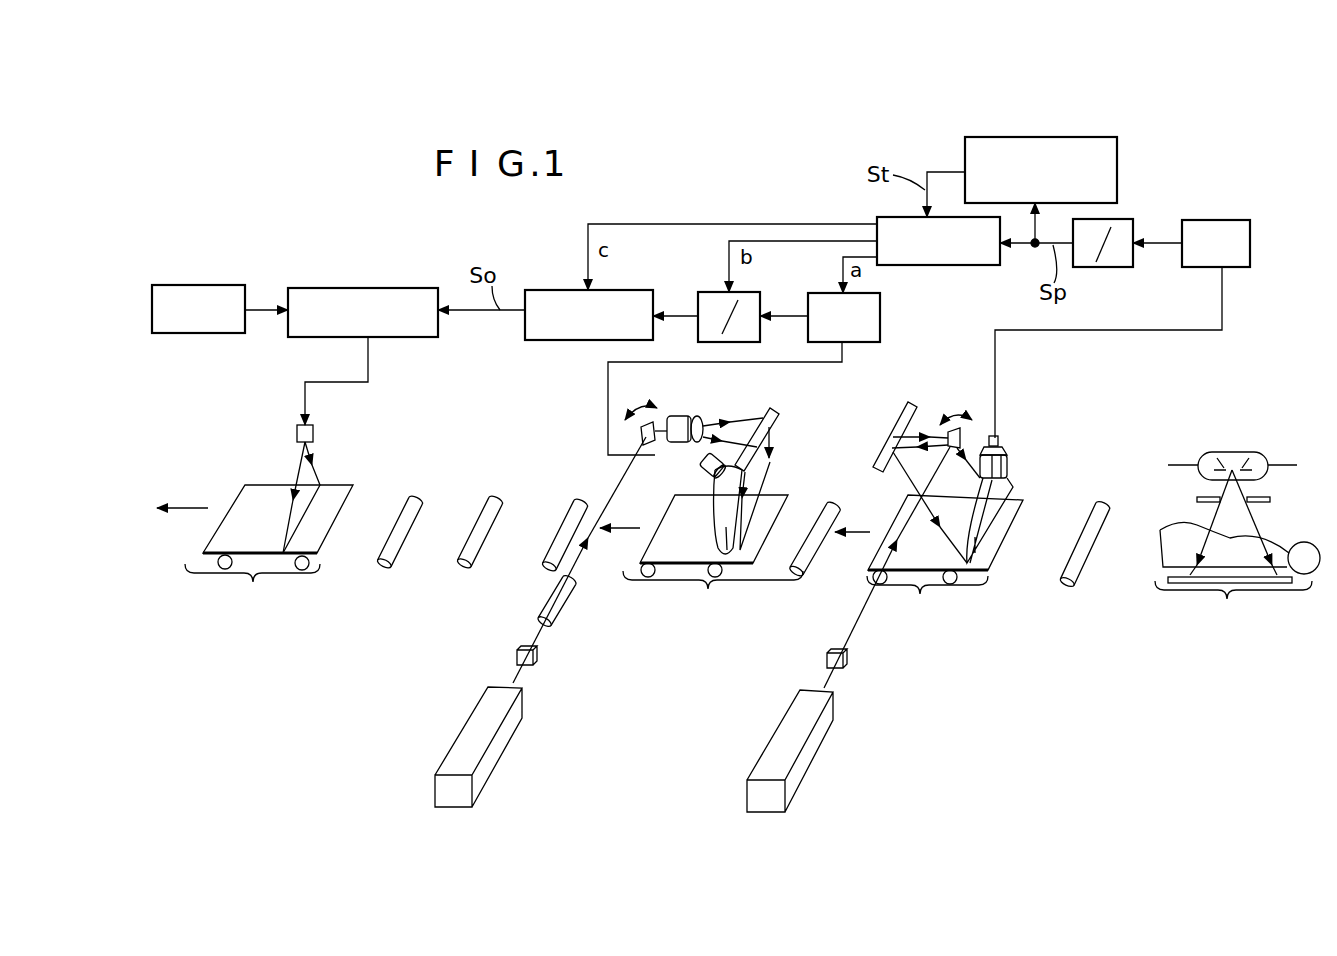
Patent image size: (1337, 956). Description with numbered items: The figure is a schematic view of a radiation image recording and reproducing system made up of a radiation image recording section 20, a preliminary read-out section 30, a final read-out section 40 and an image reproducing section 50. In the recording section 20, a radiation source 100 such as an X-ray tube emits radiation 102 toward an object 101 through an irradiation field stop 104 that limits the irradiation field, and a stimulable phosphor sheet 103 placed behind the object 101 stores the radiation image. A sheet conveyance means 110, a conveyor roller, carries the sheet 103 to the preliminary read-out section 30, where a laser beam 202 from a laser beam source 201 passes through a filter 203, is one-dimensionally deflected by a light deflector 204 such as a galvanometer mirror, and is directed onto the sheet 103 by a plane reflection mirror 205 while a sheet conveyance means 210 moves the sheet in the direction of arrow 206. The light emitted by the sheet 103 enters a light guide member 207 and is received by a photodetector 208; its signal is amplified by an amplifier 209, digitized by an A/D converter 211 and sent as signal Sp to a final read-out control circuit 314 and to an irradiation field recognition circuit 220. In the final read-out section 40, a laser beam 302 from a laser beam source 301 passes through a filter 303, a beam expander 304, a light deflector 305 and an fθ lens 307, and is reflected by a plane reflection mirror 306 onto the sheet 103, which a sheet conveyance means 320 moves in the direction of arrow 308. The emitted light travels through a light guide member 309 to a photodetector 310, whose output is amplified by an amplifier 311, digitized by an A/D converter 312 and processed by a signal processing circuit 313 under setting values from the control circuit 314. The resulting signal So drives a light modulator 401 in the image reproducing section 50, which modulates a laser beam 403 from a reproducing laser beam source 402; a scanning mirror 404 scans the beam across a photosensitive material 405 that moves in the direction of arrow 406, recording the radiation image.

The radiation image recording section 20 is at (1229, 520).
The preliminary read-out section 30 is at (945, 563).
The final read-out section 40 is at (713, 561).
The image reproducing section 50 is at (269, 530).
The radiation source 100 is at (1237, 450).
The object 101 is at (1230, 547).
The radiation 102 is at (1208, 514).
The stimulable phosphor sheet 103 is at (772, 500).
The irradiation field stop 104 is at (1268, 499).
The sheet conveyance means 110 is at (1072, 590).
The laser beam source 201 is at (812, 757).
The laser beam 202 is at (830, 680).
The filter 203 is at (847, 660).
The light deflector 204 is at (962, 440).
The plane reflection mirror 205 is at (912, 402).
The arrow 206 is at (867, 532).
The light guide member 207 is at (1003, 493).
The photodetector 208 is at (1007, 457).
The amplifier 209 is at (1213, 220).
The sheet conveyance means 210 is at (955, 585).
The A/D converter 211 is at (1110, 267).
The irradiation field recognition circuit 220 is at (1118, 178).
The laser beam source 301 is at (503, 740).
The laser beam 302 is at (520, 675).
The filter 303 is at (537, 657).
The beam expander 304 is at (567, 602).
The light deflector 305 is at (658, 424).
The plane reflection mirror 306 is at (777, 412).
The fθ lens 307 is at (702, 415).
The arrow 308 is at (638, 528).
The light guide member 309 is at (755, 480).
The photodetector 310 is at (700, 465).
The amplifier 311 is at (811, 293).
The A/D converter 312 is at (703, 292).
The signal processing circuit 313 is at (543, 290).
The final read-out control circuit 314 is at (965, 265).
The sheet conveyance means 320 is at (720, 578).
The light modulator 401 is at (406, 288).
The reproducing laser beam source 402 is at (225, 285).
The laser beam 403 is at (258, 318).
The scanning mirror 404 is at (313, 437).
The photosensitive material 405 is at (263, 493).
The arrow 406 is at (195, 508).